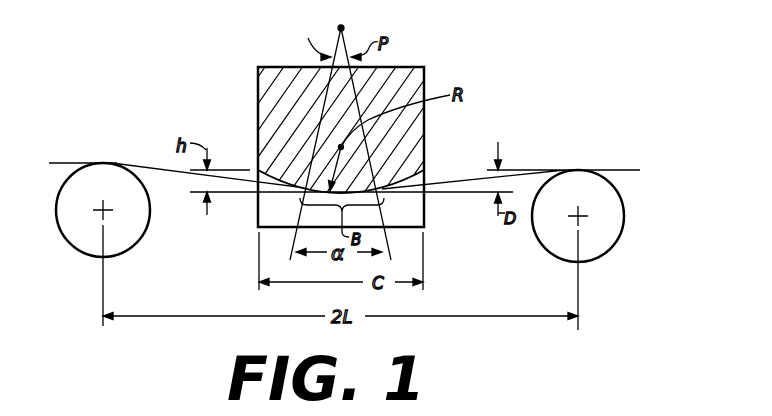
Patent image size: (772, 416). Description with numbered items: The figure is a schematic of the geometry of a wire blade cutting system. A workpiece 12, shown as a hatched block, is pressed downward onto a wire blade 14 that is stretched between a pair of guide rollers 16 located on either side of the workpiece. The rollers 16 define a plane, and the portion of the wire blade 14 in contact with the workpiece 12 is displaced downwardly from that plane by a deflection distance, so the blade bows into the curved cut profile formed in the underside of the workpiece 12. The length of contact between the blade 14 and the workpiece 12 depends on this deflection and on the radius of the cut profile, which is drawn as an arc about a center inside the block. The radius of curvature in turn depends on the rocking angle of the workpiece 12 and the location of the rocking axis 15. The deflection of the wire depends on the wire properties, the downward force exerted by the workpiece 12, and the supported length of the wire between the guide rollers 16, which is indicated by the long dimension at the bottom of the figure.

The workpiece 12 is at (258, 77).
The wire blade 14 is at (255, 186).
The rocking axis 15 is at (341, 147).
The guide rollers 16 is at (70, 243).